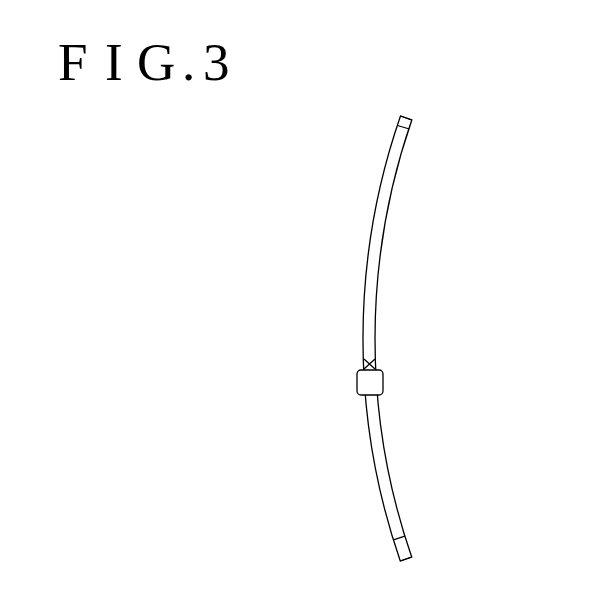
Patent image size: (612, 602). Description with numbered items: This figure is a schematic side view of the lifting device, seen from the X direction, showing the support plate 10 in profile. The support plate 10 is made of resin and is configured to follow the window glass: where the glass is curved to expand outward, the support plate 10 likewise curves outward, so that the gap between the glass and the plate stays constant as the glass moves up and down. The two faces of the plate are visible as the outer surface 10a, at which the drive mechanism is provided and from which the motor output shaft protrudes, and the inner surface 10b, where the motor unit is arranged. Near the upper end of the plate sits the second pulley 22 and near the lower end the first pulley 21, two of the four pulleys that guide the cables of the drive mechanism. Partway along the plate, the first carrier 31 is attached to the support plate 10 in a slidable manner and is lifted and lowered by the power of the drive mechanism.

The support plate 10 is at (392, 190).
The outer surface 10a is at (366, 260).
The inner surface 10b is at (380, 262).
The first pulley 21 is at (396, 557).
The second pulley 22 is at (396, 121).
The first carrier 31 is at (384, 383).